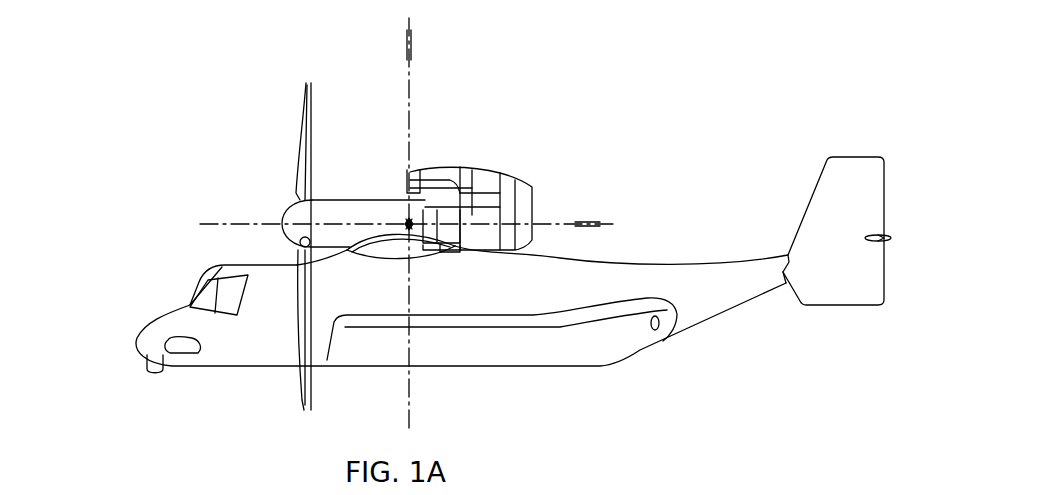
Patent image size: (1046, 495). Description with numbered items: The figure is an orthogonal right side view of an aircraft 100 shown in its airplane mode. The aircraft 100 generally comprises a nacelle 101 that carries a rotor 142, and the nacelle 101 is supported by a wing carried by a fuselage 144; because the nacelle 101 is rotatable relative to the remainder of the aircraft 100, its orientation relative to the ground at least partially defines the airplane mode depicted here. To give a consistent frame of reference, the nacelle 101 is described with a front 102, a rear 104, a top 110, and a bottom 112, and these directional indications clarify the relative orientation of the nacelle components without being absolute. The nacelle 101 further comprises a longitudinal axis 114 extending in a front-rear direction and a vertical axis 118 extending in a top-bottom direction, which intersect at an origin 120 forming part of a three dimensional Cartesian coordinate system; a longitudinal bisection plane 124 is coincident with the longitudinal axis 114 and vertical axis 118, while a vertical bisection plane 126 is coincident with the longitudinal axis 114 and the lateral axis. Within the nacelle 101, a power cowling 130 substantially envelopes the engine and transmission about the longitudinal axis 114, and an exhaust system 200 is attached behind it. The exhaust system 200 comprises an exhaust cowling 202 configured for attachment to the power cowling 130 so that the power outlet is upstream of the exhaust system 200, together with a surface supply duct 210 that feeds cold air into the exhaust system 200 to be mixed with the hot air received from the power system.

The aircraft 100 is at (750, 55).
The nacelle 101 is at (535, 115).
The front 102 is at (262, 213).
The rear 104 is at (642, 213).
The top 110 is at (388, 68).
The bottom 112 is at (390, 388).
The longitudinal axis 114 is at (591, 222).
The vertical axis 118 is at (410, 37).
The origin 120 is at (397, 214).
The longitudinal bisection plane 124 is at (461, 37).
The vertical bisection plane 126 is at (611, 186).
The power cowling 130 is at (348, 198).
The rotor 142 is at (302, 110).
The fuselage 144 is at (258, 369).
The exhaust system 200 is at (475, 153).
The exhaust cowling 202 is at (512, 174).
The surface supply duct 210 is at (448, 253).